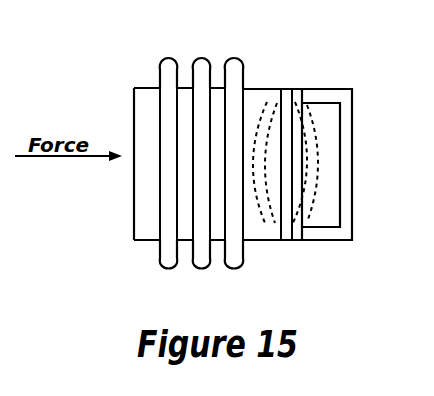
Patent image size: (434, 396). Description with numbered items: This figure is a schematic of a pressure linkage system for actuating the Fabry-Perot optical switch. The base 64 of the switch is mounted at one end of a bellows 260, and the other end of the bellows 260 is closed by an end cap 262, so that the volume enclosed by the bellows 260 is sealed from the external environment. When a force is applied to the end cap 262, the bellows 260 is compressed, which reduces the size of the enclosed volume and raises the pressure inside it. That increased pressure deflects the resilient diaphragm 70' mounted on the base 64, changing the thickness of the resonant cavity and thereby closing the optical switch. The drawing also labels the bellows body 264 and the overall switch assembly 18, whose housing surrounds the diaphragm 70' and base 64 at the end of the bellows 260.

The actuator assembly 18 is at (326, 75).
The base 64 is at (346, 157).
The diaphragm 70' is at (282, 133).
The bellows 260 is at (202, 58).
The end cap 262 is at (133, 173).
The bellows body 264 is at (183, 202).